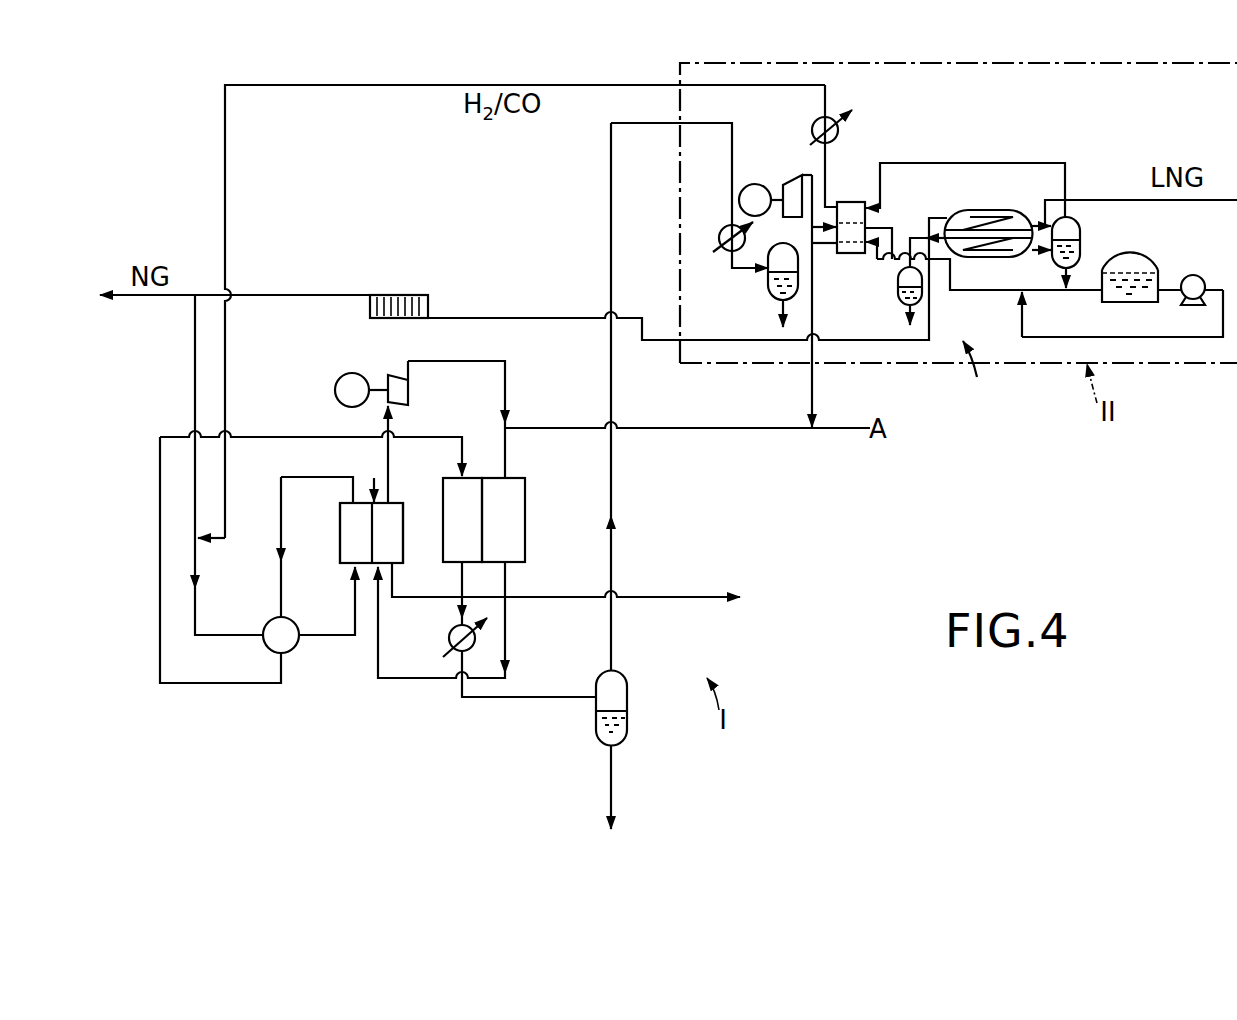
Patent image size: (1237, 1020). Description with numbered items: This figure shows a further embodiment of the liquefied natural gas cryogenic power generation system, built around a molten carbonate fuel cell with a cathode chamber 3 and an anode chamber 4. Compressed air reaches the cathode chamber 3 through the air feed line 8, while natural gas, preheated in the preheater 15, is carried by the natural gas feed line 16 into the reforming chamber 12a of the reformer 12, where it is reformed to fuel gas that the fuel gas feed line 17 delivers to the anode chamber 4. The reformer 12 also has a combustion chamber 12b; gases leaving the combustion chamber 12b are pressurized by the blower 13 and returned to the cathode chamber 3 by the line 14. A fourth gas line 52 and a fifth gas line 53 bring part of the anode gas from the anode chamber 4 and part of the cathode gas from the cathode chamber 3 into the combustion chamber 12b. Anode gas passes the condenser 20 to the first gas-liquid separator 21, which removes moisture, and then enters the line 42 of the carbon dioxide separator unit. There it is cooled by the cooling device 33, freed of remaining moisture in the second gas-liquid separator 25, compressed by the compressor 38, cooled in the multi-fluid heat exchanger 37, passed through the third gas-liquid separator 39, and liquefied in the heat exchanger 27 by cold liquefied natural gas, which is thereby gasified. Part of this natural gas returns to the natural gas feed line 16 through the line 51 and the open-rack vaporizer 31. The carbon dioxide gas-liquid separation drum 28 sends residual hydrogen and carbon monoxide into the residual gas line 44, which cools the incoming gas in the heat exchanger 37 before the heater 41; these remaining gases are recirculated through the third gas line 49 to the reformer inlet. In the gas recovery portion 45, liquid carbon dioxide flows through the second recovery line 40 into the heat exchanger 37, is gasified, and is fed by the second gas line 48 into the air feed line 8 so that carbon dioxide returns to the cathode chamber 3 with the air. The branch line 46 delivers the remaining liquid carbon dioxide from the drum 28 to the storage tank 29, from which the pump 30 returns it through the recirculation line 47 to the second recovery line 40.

The cathode chamber 3 is at (523, 533).
The anode chamber 4 is at (470, 487).
The air feed line 8 is at (717, 428).
The reformer 12 is at (371, 484).
The reforming chamber 12a is at (340, 538).
The combustion chamber 12b is at (397, 527).
The blower 13 is at (400, 375).
The line 14 is at (508, 395).
The preheater 15 is at (292, 650).
The natural gas feed line 16 is at (199, 622).
The fuel gas feed line 17 is at (300, 437).
The condenser 20 is at (447, 652).
The first gas-liquid separator 21 is at (627, 700).
The second gas-liquid separator 25 is at (772, 295).
The indirect heating type heat exchanger 27 is at (977, 210).
The carbon dioxide gas-liquid separation drum 28 is at (1080, 250).
The storage tank 29 is at (1137, 302).
The pump 30 is at (1198, 275).
The open-rack vaporizer 31 is at (420, 295).
The cooling device 33 is at (723, 228).
The multi-fluid type heat exchanger 37 is at (858, 200).
The compressor 38 is at (797, 185).
The third gas-liquid separator 39 is at (900, 302).
The second recovery line 40 is at (968, 290).
The heater 41 is at (838, 115).
The line 42 is at (732, 133).
The residual gas line 44 is at (1012, 163).
The gas recovery portion 45 is at (985, 370).
The branch line 46 is at (1090, 293).
The recirculation line 47 is at (1138, 339).
The second gas line 48 is at (812, 398).
The third gas line 49 is at (225, 145).
The line 51 is at (907, 342).
The fourth gas line 52 is at (397, 680).
The fifth gas line 53 is at (440, 597).